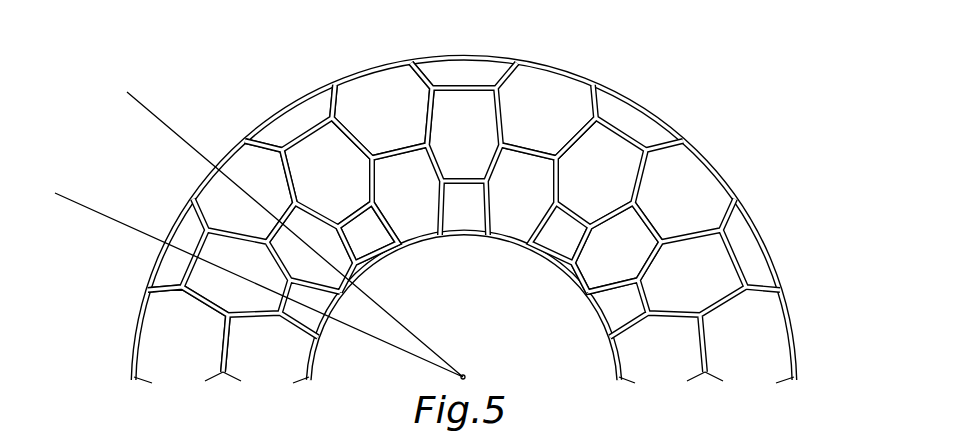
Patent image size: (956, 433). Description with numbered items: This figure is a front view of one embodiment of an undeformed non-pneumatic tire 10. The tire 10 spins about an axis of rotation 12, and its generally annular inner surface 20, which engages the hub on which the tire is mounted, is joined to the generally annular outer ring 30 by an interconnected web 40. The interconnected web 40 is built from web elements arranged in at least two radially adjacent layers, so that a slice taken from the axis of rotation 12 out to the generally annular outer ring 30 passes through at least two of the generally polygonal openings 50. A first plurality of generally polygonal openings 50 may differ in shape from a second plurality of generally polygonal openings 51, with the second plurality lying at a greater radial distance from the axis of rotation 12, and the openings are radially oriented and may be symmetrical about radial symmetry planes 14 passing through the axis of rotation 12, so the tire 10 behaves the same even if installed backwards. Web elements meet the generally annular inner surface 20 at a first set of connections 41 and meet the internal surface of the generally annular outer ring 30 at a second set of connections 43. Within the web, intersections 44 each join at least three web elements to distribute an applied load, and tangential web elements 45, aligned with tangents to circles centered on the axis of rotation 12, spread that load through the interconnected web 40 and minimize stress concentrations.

The non-pneumatic tire 10 is at (441, 197).
The axis of rotation 12 is at (465, 376).
The radial symmetry planes 14 is at (127, 92).
The generally annular inner surface 20 is at (372, 262).
The generally annular outer ring 30 is at (708, 152).
The interconnected web 40 is at (700, 283).
The first set of connections 41 is at (362, 248).
The second set of connections 43 is at (410, 64).
The intersections 44 is at (267, 242).
The tangential web elements 45 is at (605, 132).
The generally polygonal openings 50 is at (637, 353).
The second plurality of generally polygonal openings 51 is at (153, 357).